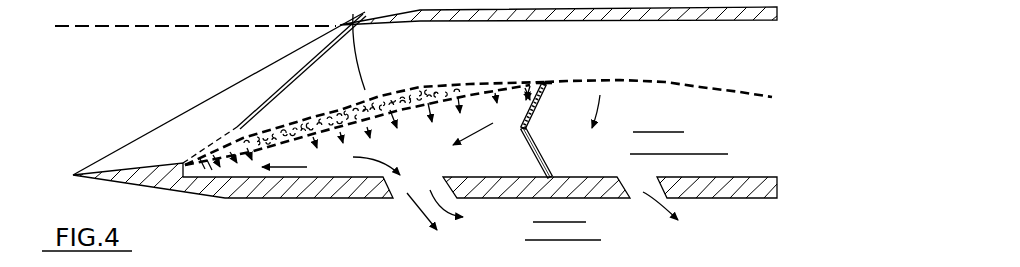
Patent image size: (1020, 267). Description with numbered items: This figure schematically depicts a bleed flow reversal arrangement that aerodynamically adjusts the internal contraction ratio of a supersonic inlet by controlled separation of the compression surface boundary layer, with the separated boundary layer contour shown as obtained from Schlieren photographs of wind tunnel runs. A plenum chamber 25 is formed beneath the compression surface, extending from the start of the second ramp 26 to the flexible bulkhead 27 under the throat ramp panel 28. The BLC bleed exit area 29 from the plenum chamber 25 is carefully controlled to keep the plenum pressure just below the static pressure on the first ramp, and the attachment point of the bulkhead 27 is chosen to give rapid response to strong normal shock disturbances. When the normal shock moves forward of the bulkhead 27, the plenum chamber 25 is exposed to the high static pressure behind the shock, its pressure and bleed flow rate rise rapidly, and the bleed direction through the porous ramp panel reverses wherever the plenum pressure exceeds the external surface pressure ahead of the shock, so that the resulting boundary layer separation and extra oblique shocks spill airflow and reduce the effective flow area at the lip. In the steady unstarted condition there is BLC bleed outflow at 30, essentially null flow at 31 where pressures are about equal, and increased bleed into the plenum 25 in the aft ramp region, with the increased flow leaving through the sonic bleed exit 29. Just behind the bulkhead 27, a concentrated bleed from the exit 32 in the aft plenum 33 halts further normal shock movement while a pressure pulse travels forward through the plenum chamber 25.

The plenum chamber 25 is at (527, 223).
The second ramp 26 is at (238, 153).
The flexible bulkhead 27 is at (548, 160).
The throat ramp panel 28 is at (536, 82).
The BLC bleed exit area 29 is at (400, 190).
The BLC bleed outflow region 30 is at (233, 168).
The null flow region 31 is at (283, 152).
The bleed exit 32 is at (633, 192).
The aft plenum 33 is at (658, 118).